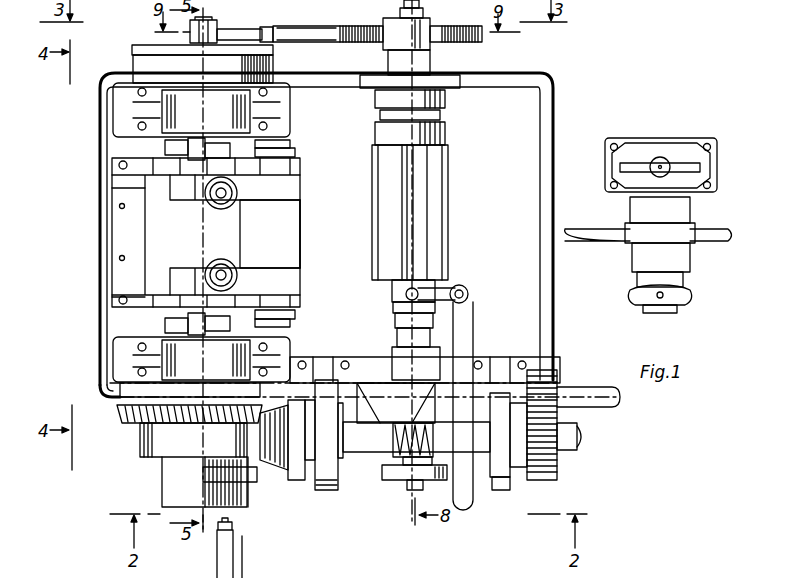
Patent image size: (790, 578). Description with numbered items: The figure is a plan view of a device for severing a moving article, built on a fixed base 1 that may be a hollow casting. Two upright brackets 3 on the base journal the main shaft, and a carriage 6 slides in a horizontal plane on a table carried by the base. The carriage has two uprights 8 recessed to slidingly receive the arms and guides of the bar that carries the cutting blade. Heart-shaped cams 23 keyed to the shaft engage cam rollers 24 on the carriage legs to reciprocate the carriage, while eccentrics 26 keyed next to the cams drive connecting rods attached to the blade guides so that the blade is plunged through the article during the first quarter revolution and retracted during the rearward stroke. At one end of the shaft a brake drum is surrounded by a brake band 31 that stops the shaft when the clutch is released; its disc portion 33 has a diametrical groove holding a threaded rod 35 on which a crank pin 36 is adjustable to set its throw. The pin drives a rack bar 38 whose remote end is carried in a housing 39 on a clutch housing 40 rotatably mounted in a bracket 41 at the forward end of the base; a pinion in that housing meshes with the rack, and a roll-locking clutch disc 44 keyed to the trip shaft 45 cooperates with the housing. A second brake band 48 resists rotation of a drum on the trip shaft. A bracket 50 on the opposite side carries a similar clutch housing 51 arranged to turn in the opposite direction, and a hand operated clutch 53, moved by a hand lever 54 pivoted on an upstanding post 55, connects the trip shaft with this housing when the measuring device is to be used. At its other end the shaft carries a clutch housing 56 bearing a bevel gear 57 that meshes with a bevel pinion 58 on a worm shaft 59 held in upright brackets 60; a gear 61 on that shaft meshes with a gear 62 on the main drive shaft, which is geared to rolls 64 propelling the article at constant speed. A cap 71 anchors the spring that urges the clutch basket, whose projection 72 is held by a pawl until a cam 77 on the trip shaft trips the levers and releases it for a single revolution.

The fixed base 1 is at (522, 147).
The upright brackets 3 is at (282, 110).
The carriage 6 is at (290, 212).
The uprights 8 is at (238, 272).
The heart-shaped cams 23 is at (276, 188).
The cam rollers 24 is at (282, 173).
The eccentrics 26 is at (284, 152).
The brake band 31 is at (148, 68).
The disc portion 33 is at (158, 48).
The threaded rod 35 is at (211, 32).
The crank pin 36 is at (195, 38).
The rack bar 38 is at (373, 27).
The housing 39 is at (418, 33).
The clutch housing 40 is at (447, 99).
The bracket 41 is at (442, 80).
The clutch disc 44 is at (441, 115).
The trip shaft 45 is at (410, 207).
The brake band 48 is at (447, 131).
The bracket 50 is at (374, 374).
The clutch housing 51 is at (404, 358).
The hand operated clutch 53 is at (426, 284).
The hand lever 54 is at (466, 334).
The upstanding post 55 is at (470, 290).
The clutch housing 56 is at (160, 445).
The bevel gear 57 is at (136, 415).
The bevel pinion 58 is at (290, 456).
The worm shaft 59 is at (400, 441).
The upright brackets 60 is at (323, 492).
The gear 61 is at (560, 470).
The gear 62 is at (556, 375).
The rolls 64 is at (688, 242).
The cap 71 is at (172, 502).
The projection 72 is at (250, 482).
The cam 77 is at (396, 475).